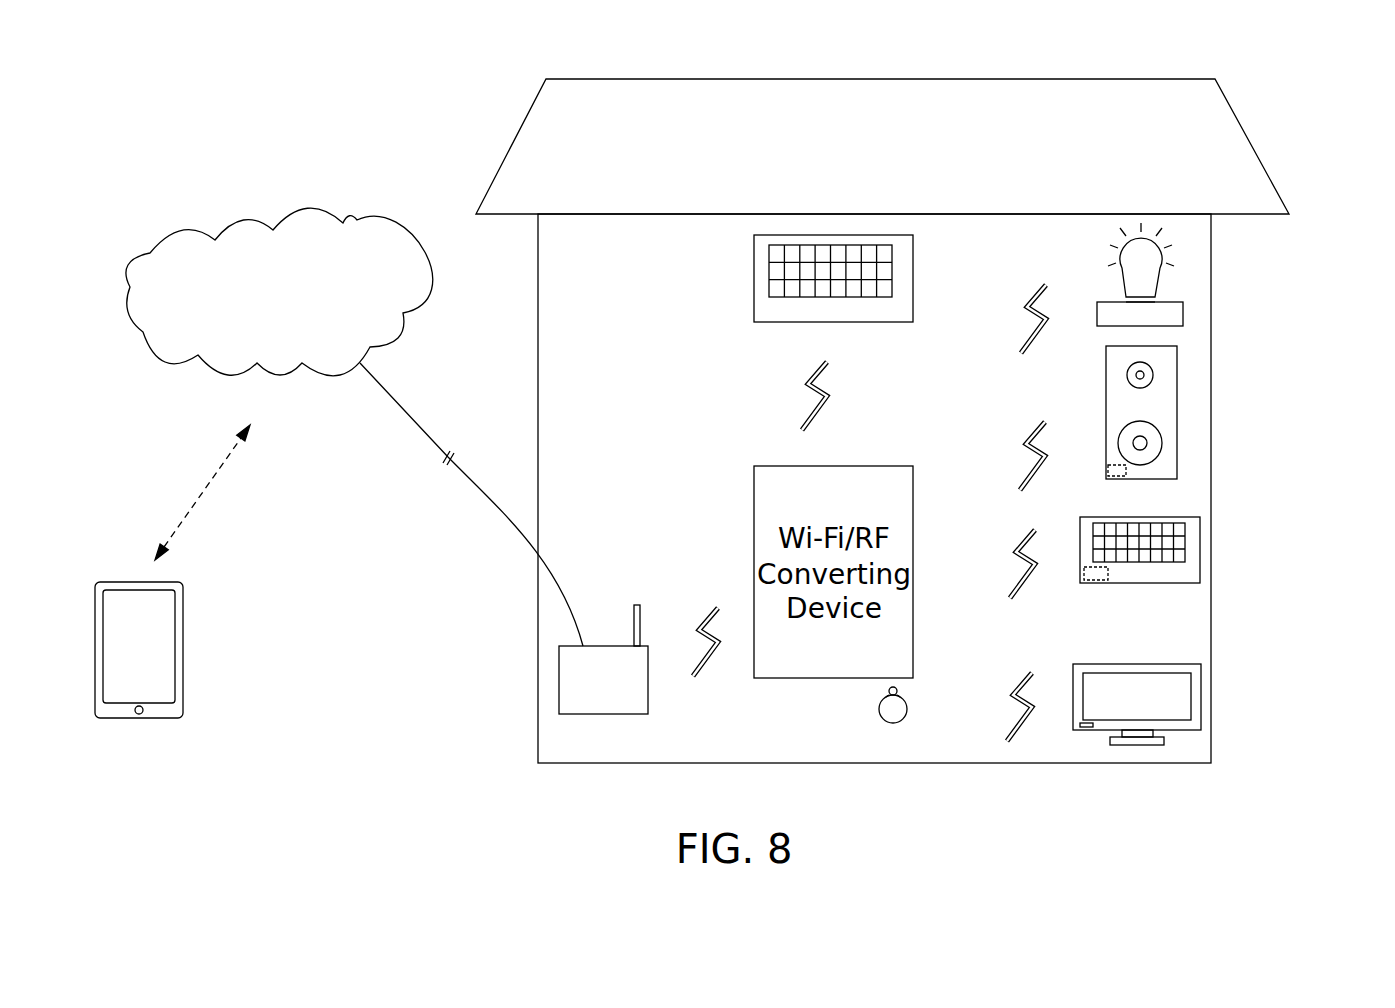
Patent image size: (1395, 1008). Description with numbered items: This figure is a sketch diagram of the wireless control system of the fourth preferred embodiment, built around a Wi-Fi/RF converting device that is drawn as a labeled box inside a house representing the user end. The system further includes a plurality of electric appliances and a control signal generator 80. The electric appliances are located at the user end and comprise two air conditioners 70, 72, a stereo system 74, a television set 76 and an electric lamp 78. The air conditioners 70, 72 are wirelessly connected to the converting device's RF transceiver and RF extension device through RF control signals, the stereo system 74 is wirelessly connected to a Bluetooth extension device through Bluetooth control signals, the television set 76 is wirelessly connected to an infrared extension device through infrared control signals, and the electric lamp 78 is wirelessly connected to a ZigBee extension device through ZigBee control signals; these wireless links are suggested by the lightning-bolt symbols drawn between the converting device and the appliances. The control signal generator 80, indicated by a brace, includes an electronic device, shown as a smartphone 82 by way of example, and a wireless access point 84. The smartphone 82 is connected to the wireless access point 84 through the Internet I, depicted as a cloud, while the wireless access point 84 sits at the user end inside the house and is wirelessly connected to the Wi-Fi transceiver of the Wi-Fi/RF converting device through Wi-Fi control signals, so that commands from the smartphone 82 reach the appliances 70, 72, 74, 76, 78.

The Internet I is at (357, 220).
The air conditioner 70 is at (754, 280).
The air conditioner 72 is at (1200, 547).
The stereo system 74 is at (1177, 412).
The television set 76 is at (1201, 697).
The electric lamp 78 is at (1183, 313).
The control signal generator 80 is at (253, 608).
The smartphone 82 is at (183, 677).
The wireless access point 84 is at (559, 678).